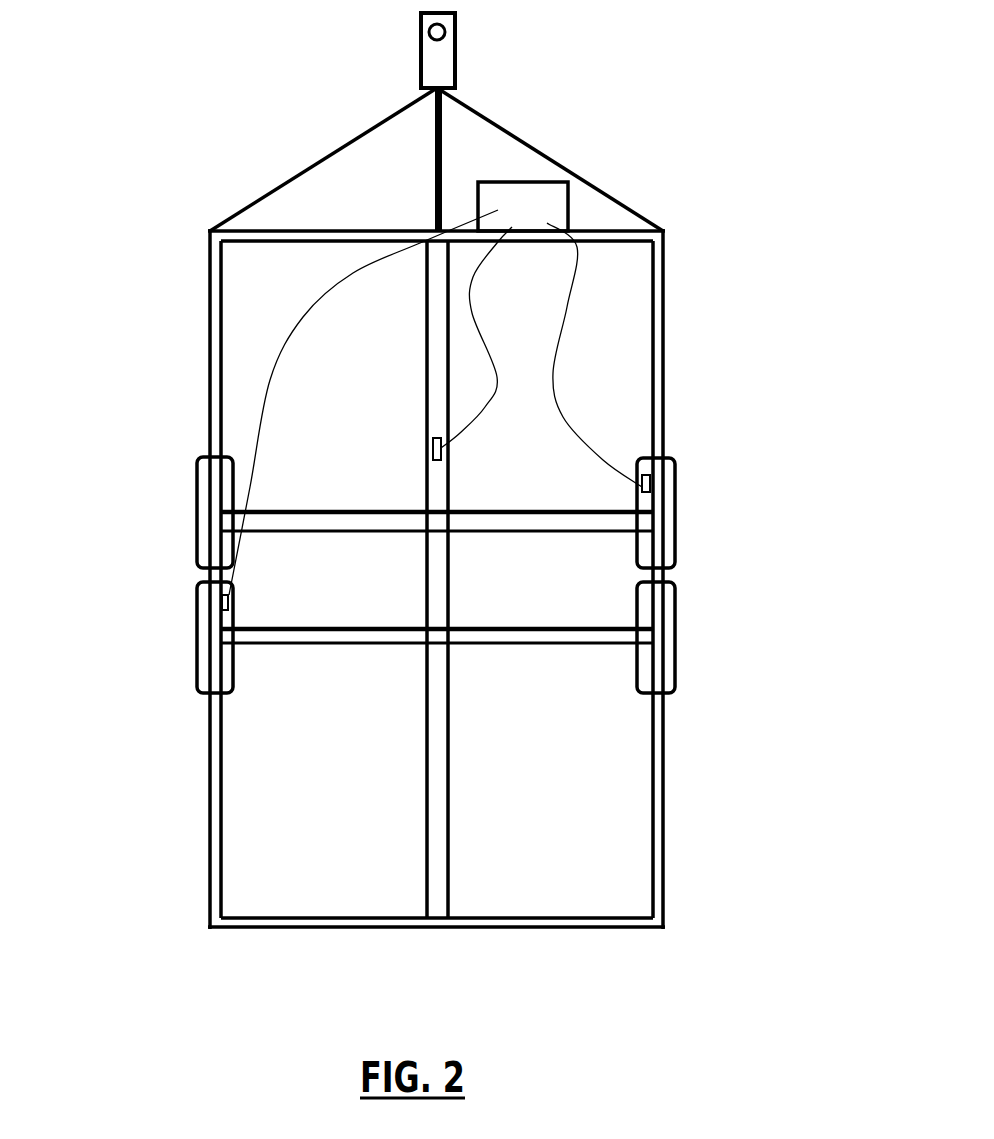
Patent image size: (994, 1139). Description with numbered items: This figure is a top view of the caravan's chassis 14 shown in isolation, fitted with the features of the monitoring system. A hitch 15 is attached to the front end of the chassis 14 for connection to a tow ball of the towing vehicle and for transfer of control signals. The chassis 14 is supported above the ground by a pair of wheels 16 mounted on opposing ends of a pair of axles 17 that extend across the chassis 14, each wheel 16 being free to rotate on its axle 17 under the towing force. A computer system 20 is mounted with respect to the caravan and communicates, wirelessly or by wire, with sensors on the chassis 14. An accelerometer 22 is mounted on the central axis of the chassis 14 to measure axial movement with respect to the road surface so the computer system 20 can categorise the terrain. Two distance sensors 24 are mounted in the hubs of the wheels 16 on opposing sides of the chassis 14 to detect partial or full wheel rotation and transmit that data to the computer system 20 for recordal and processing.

The chassis 14 is at (697, 207).
The hitch 15 is at (470, 83).
The wheels 16 is at (197, 538).
The axles 17 is at (410, 640).
The computer system 20 is at (556, 194).
The accelerometer 22 is at (437, 462).
The distance sensor 24 is at (653, 475).